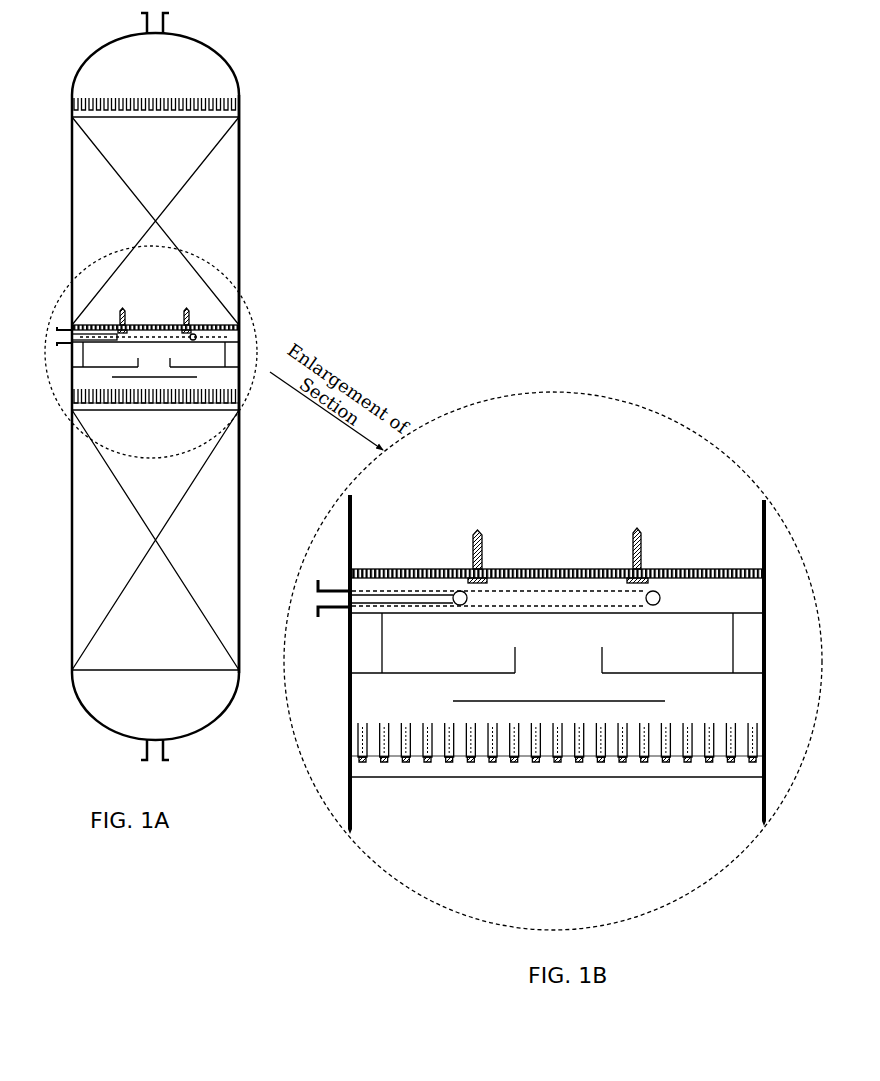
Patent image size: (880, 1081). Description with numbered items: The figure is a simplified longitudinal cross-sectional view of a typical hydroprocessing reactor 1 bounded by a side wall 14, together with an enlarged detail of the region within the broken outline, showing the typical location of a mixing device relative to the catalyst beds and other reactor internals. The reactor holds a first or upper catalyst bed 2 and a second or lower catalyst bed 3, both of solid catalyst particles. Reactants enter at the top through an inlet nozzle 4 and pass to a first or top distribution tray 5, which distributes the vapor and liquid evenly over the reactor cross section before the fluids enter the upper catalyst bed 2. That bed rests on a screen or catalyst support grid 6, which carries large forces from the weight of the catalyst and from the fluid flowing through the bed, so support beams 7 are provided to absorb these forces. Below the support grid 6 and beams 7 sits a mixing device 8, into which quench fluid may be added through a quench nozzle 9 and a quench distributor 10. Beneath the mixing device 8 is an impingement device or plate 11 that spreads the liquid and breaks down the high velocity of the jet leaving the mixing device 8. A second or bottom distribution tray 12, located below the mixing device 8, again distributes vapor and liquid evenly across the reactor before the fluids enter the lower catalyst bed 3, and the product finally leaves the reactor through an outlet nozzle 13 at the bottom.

In FIG. 1A, the hydroprocessing reactor 1 is at (245, 157).
In FIG. 1A, the first or upper catalyst bed 2 is at (108, 210).
In FIG. 1B, the first or upper catalyst bed 2 is at (537, 504).
In FIG. 1A, the second or lower catalyst bed 3 is at (110, 524).
In FIG. 1B, the second or lower catalyst bed 3 is at (553, 818).
In FIG. 1A, the inlet nozzle 4 is at (163, 23).
In FIG. 1A, the first or top distribution tray 5 is at (168, 100).
In FIG. 1A, the catalyst support grid 6 is at (155, 331).
In FIG. 1B, the catalyst support grid 6 is at (532, 569).
In FIG. 1A, the support beams 7 is at (154, 320).
In FIG. 1B, the support beams 7 is at (472, 548).
In FIG. 1A, the mixing device 8 is at (155, 354).
In FIG. 1B, the mixing device 8 is at (408, 678).
In FIG. 1A, the quench nozzle 9 is at (64, 336).
In FIG. 1B, the quench nozzle 9 is at (337, 612).
In FIG. 1A, the quench distributor 10 is at (134, 337).
In FIG. 1B, the quench distributor 10 is at (660, 596).
In FIG. 1B, the impingement device or plate 11 is at (645, 707).
In FIG. 1A, the second or bottom distribution tray 12 is at (155, 399).
In FIG. 1B, the second or bottom distribution tray 12 is at (714, 755).
In FIG. 1A, the outlet nozzle 13 is at (163, 751).
In FIG. 1A, the side wall 14 is at (242, 240).
In FIG. 1B, the side wall 14 is at (766, 640).